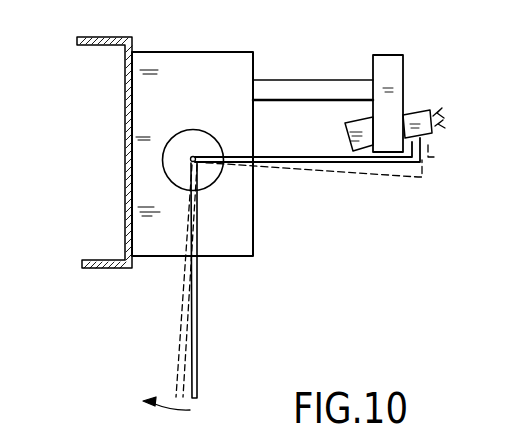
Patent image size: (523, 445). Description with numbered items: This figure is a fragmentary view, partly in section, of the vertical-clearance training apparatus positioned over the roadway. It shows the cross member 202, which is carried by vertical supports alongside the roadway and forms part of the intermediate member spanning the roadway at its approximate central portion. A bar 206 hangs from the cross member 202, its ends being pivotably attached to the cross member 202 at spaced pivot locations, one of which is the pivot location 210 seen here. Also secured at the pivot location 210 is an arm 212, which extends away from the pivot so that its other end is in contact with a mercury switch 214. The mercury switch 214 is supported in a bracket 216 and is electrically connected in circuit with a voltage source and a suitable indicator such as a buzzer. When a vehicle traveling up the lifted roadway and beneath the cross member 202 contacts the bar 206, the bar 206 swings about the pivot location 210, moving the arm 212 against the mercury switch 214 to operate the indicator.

The cross member 202 is at (97, 268).
The bar 206 is at (197, 342).
The pivot location 210 is at (220, 119).
The arm 212 is at (318, 167).
The mercury switch 214 is at (418, 110).
The bracket 216 is at (395, 62).